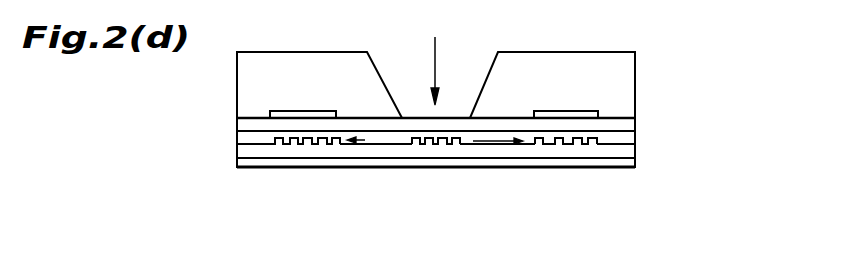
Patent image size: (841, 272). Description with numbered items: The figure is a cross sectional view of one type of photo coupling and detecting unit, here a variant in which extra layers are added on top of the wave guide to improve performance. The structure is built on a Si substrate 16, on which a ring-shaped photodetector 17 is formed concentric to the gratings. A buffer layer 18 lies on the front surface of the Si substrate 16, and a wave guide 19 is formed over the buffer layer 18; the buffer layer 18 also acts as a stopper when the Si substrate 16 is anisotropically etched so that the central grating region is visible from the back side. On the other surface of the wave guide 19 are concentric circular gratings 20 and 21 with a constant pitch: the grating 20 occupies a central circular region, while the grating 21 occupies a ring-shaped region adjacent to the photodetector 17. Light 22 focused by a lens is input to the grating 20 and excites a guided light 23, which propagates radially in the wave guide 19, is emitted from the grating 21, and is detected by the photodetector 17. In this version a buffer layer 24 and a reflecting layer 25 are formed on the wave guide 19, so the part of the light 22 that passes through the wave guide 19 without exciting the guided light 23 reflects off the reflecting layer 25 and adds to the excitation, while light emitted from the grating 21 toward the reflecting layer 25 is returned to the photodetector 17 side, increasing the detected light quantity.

The Si substrate 16 is at (612, 70).
The photodetector 17 is at (270, 112).
The buffer layer 18 is at (625, 130).
The wave guide 19 is at (630, 143).
The grating 20 is at (418, 147).
The grating 21 is at (298, 147).
The light 22 is at (435, 37).
The guided light 23 is at (370, 143).
The buffer layer 24 is at (632, 158).
The reflecting layer 25 is at (601, 170).